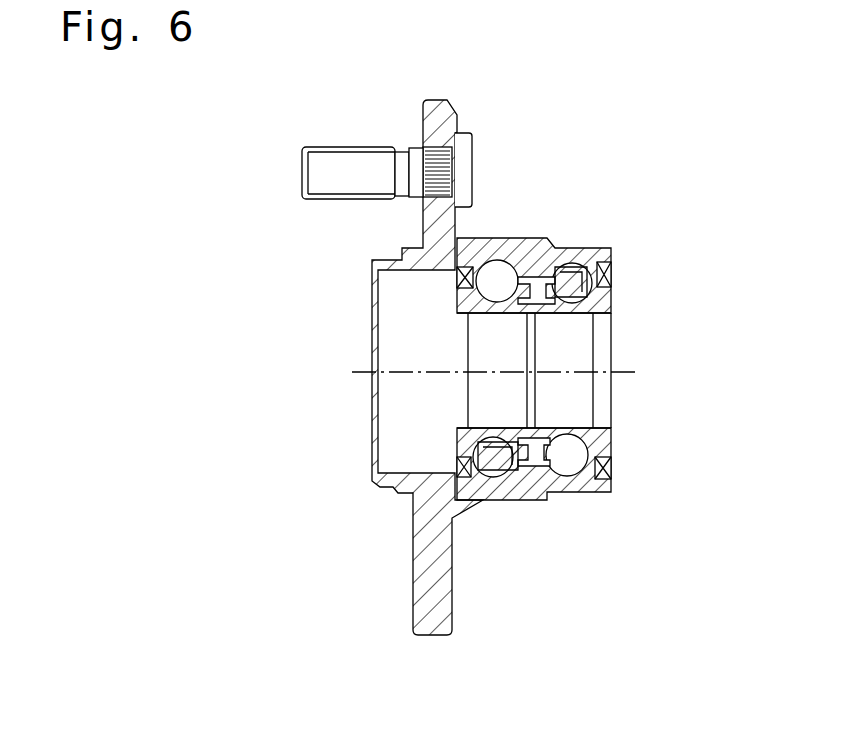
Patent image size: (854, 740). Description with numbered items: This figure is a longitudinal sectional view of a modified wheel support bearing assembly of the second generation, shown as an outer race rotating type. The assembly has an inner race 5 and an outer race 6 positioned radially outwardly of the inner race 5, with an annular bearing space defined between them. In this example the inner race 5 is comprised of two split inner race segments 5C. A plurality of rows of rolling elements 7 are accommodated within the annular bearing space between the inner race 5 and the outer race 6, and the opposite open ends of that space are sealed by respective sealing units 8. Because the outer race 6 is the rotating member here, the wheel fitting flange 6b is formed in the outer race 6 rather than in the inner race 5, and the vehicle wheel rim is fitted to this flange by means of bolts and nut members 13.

The inner race 5 is at (477, 317).
The split inner race segments 5C is at (500, 312).
The outer race 6 is at (548, 244).
The wheel fitting flange 6b is at (433, 127).
The rolling elements 7 is at (565, 473).
The sealing units 8 is at (467, 268).
The bolts and nut members 13 is at (358, 160).